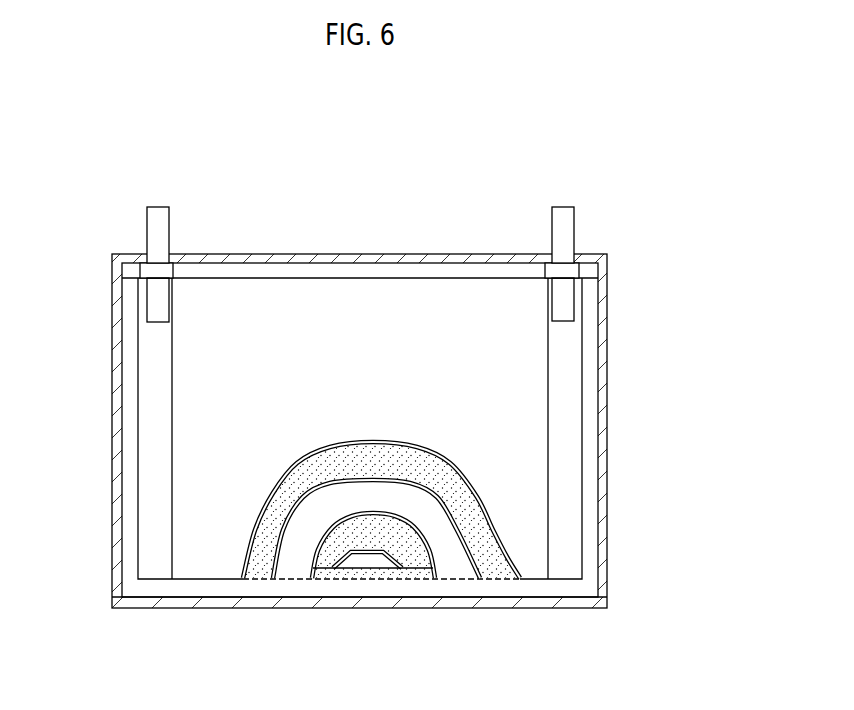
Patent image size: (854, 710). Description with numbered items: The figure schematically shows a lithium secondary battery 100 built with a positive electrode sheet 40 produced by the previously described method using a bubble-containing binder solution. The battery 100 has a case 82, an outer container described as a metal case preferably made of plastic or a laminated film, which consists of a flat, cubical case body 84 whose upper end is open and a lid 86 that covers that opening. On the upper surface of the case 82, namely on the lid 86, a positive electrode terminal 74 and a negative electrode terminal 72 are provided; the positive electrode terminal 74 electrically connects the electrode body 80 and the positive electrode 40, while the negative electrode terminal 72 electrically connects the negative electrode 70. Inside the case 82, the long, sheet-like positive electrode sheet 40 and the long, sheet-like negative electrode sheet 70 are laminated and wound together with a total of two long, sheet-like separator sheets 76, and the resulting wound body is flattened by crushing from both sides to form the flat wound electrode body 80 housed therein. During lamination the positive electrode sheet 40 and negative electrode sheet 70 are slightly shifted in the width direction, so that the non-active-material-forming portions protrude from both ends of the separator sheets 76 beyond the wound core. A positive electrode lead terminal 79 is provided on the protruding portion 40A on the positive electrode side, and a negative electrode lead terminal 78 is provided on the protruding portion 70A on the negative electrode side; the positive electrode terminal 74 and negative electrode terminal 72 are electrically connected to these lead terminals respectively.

The lithium secondary battery 100 is at (487, 137).
The case 82 is at (608, 388).
The case body 84 is at (603, 500).
The lid 86 is at (255, 258).
The positive electrode terminal 74 is at (156, 215).
The negative electrode terminal 72 is at (563, 215).
The positive electrode lead terminal 79 is at (160, 307).
The negative electrode lead terminal 78 is at (560, 307).
The protruding portion on the side of the positive electrode 40A is at (153, 461).
The protruding portion on the side of the negative electrode 70A is at (566, 476).
The wound electrode body 80 is at (523, 583).
The separator sheets 76 is at (260, 562).
The positive electrode sheet 40 is at (217, 565).
The negative electrode sheet 70 is at (296, 565).